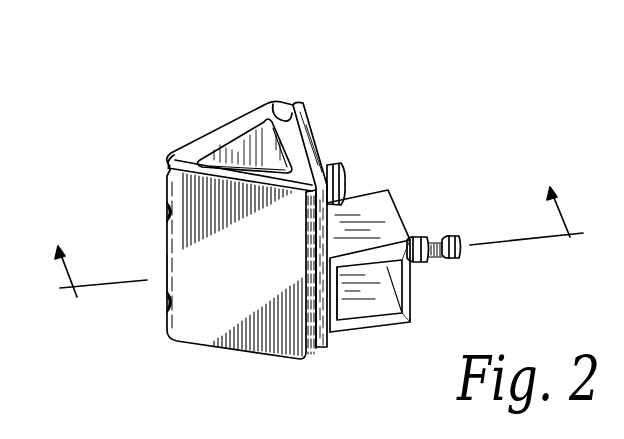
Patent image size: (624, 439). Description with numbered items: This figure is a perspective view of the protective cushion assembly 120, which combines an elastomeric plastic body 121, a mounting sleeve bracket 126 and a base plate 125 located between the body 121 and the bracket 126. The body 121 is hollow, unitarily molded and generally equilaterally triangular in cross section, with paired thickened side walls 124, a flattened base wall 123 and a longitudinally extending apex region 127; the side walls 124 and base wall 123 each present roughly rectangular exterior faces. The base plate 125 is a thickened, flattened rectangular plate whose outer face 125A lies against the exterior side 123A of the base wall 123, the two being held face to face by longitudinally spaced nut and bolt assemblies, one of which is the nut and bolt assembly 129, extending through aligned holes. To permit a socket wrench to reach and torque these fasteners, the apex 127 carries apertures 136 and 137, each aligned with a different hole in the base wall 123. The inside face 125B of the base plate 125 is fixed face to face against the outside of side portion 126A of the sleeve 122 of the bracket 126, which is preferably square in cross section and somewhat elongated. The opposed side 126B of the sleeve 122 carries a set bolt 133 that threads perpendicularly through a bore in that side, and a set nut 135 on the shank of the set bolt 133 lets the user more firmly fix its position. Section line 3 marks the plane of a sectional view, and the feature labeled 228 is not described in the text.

The protective cushion assembly 120 is at (243, 359).
The elastomeric plastic body 121 is at (223, 315).
The sleeve 122 is at (403, 190).
The base wall 123 is at (321, 140).
The exterior side of base wall 123A is at (288, 106).
The side walls 124 is at (248, 123).
The base plate 125 is at (312, 148).
The outer face of base plate 125A is at (305, 146).
The inside face of base plate 125B is at (308, 127).
The mounting sleeve bracket 126 is at (408, 207).
The side portion of sleeve 126A is at (333, 293).
The opposed side of sleeve 126B is at (410, 294).
The apex region 127 is at (167, 279).
The nut and bolt assembly 129 is at (343, 173).
The set bolt 133 is at (460, 237).
The set nut 135 is at (422, 233).
The aperture 136 is at (167, 214).
The aperture 137 is at (168, 304).
The top corner of body 228 is at (167, 166).
The section line 3- 3 is at (313, 225).